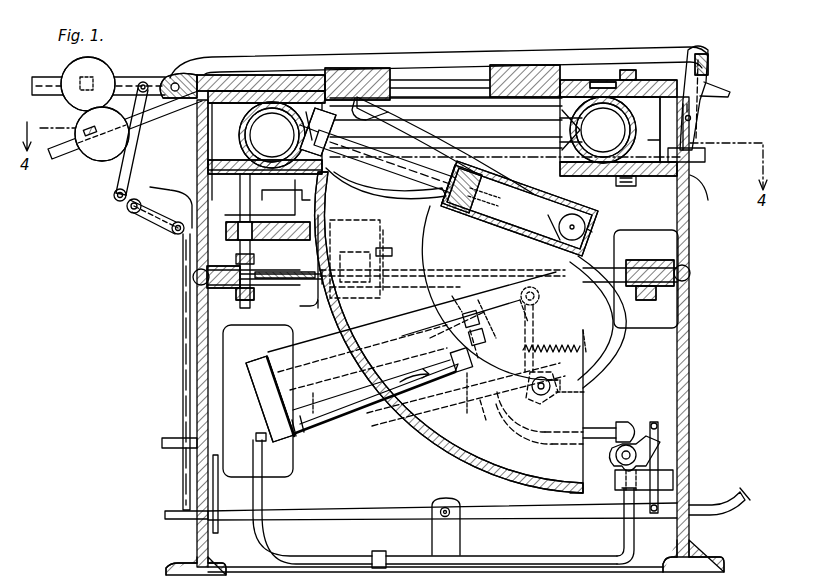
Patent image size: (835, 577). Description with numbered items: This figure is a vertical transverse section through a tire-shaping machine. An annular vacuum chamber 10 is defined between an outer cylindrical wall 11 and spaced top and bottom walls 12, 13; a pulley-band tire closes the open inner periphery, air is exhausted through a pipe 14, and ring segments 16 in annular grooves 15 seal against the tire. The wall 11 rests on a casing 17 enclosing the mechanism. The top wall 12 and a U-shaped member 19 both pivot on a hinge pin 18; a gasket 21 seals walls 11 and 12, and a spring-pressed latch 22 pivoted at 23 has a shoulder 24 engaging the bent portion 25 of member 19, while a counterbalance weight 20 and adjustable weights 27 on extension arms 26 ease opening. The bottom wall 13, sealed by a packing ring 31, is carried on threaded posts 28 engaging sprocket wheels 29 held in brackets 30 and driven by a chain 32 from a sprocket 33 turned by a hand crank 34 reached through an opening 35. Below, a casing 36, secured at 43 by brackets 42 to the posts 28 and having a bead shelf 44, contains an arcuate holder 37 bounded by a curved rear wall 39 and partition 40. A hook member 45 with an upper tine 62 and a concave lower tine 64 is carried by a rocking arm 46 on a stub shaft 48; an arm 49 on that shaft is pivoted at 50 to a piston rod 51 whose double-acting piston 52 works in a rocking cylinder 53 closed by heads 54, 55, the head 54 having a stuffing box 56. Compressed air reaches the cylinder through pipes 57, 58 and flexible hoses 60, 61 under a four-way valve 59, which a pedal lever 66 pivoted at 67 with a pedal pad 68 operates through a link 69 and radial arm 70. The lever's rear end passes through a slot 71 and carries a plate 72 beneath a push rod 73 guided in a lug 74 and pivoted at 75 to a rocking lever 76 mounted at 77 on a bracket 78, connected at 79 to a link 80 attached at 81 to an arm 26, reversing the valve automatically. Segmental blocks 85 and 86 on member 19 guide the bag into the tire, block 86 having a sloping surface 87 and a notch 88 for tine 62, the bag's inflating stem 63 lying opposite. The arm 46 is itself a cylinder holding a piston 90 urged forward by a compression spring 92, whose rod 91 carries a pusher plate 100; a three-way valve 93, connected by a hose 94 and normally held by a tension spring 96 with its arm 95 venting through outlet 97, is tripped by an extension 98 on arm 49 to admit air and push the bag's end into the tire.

The annular vacuum chamber 10 is at (210, 156).
The outer cylindrical wall 11 is at (208, 143).
The top annular wall 12 is at (240, 74).
The bottom annular wall 13 is at (232, 138).
The pipe 14 is at (700, 162).
The annular grooves 15 is at (606, 80).
The ring segments 16 is at (576, 82).
The casing 17 is at (197, 350).
The hinge pin 18 is at (184, 72).
The U-shaped member 19 is at (306, 66).
The counterbalance weight 20 is at (75, 134).
The gasket 21 is at (180, 112).
The spring-pressed latch 22 is at (731, 95).
The latch pivot 23 is at (692, 120).
The shoulder 24 is at (708, 54).
The bent intermediate portion 25 is at (708, 70).
The extension arms 26 is at (44, 78).
The adjustable counterbalance weights 27 is at (88, 84).
The posts 28 is at (236, 238).
The sprocket wheels 29 is at (242, 302).
The brackets 30 is at (206, 276).
The packing ring 31 is at (190, 210).
The endless belt or link chain 32 is at (292, 282).
The sprocket wheel 33 is at (360, 332).
The hand crank 34 is at (392, 262).
The opening 35 is at (314, 310).
The casing 36 is at (449, 332).
The arcuate holder or pocket 37 is at (448, 376).
The curved rear wall 39 is at (330, 352).
The intermediate curved wall or partition 40 is at (440, 268).
The arms or brackets 42 is at (290, 242).
The securing connection 43 is at (238, 252).
The annular shelf 44 is at (300, 204).
The fork or hook member 45 is at (490, 134).
The rocking arm 46 is at (534, 236).
The stub shaft 48 is at (560, 222).
The arm 49 is at (544, 296).
The pivot connection 50 is at (540, 300).
The piston rod 51 is at (490, 310).
The double-acting piston 52 is at (322, 432).
The rocking cylinder 53 is at (352, 410).
The cylinder head 54 is at (470, 384).
The cylinder head 55 is at (270, 372).
The stuffing box 56 is at (530, 384).
The pipe 57 is at (586, 558).
The pipe 58 is at (630, 422).
The four-way cock or valve 59 is at (588, 444).
The flexible hose section 60 is at (296, 556).
The flexible hose section 61 is at (496, 404).
The upper finger or tine 62 is at (450, 118).
The inflating stem 63 is at (568, 130).
The lower finger or tine 64 is at (350, 178).
The pedal lever 66 is at (526, 508).
The pivot 67 is at (440, 508).
The pedal pad 68 is at (742, 490).
The link 69 is at (660, 448).
The radial arm 70 is at (644, 432).
The slot 71 is at (214, 530).
The flattened portion or plate 72 is at (166, 512).
The push rod 73 is at (182, 392).
The guide lug 74 is at (164, 438).
The pivot connection 75 is at (176, 236).
The rocking lever 76 is at (156, 228).
The pivot 77 is at (128, 210).
The bracket 78 is at (154, 188).
The pivot connection 79 is at (114, 196).
The link 80 is at (120, 176).
The connection 81 is at (148, 80).
The segmental block 85 is at (522, 65).
The segmental block 86 is at (372, 66).
The upwardly sloping surface 87 is at (340, 118).
The notch 88 is at (398, 80).
The piston 90 is at (500, 230).
The piston rod 91 is at (390, 155).
The compression spring 92 is at (468, 214).
The three-way valve 93 is at (570, 402).
The flexible hose 94 is at (620, 346).
The actuating arm 95 is at (506, 336).
The tension spring 96 is at (566, 346).
The outlet 97 is at (566, 382).
The extension 98 is at (583, 328).
The segmental pusher plate 100 is at (348, 98).